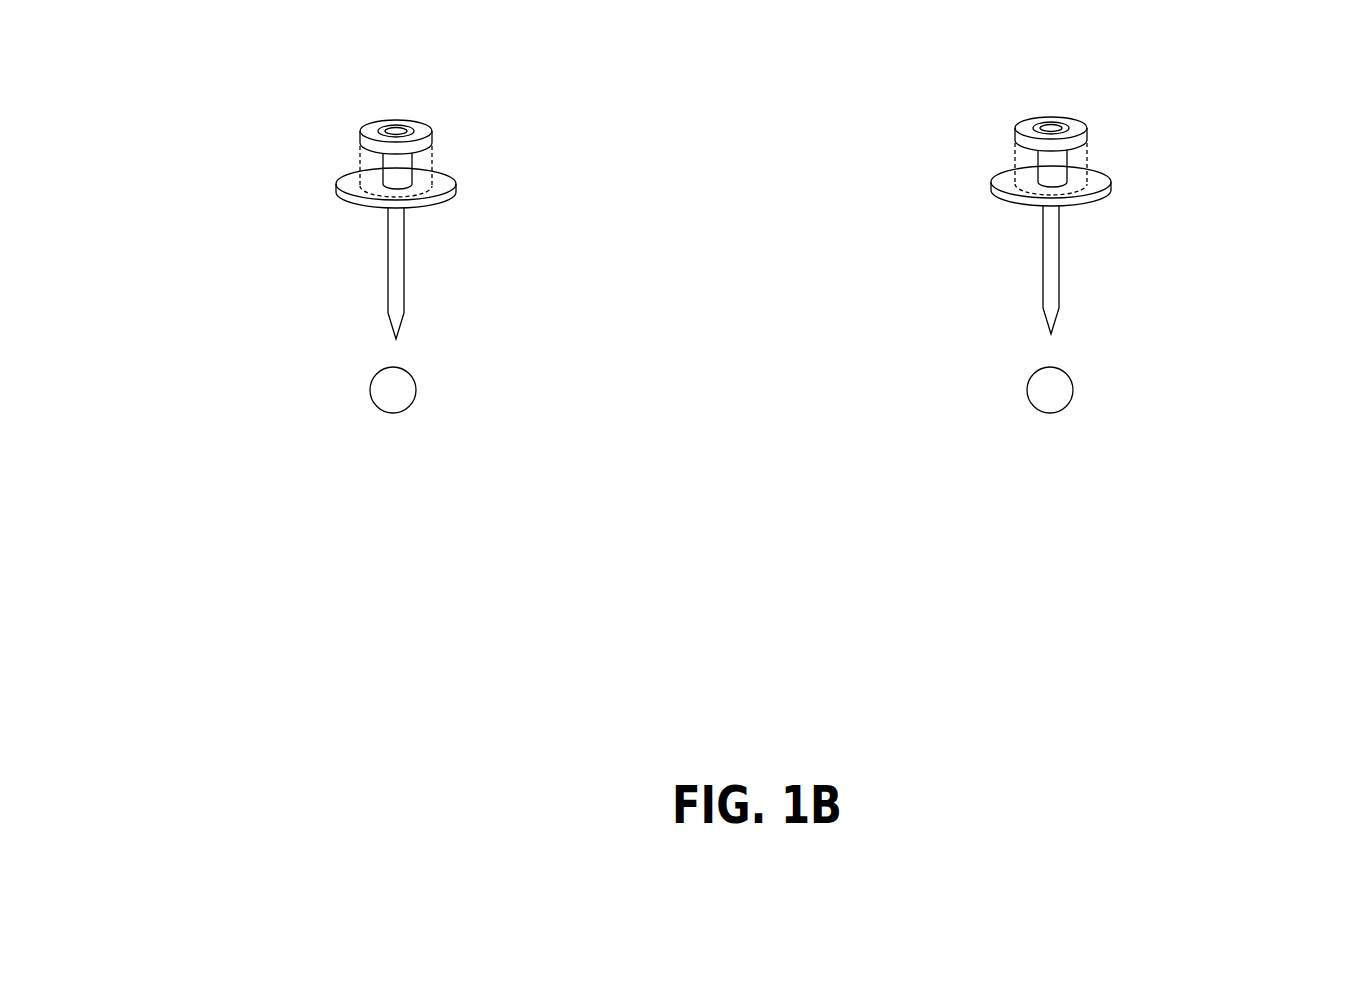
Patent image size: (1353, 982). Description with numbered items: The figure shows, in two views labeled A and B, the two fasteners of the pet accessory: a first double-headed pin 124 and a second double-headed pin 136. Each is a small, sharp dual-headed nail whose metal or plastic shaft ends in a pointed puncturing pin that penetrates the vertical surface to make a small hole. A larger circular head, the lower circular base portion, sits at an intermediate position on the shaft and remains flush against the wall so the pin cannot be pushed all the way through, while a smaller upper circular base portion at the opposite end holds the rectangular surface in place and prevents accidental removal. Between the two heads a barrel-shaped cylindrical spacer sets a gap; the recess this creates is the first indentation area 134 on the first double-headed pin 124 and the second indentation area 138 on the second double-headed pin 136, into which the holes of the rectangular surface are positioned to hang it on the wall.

The first double-headed pin 124 is at (392, 260).
The first indentation area 134 is at (510, 150).
The second double-headed pin 136 is at (1046, 257).
The second indentation area 138 is at (1165, 145).